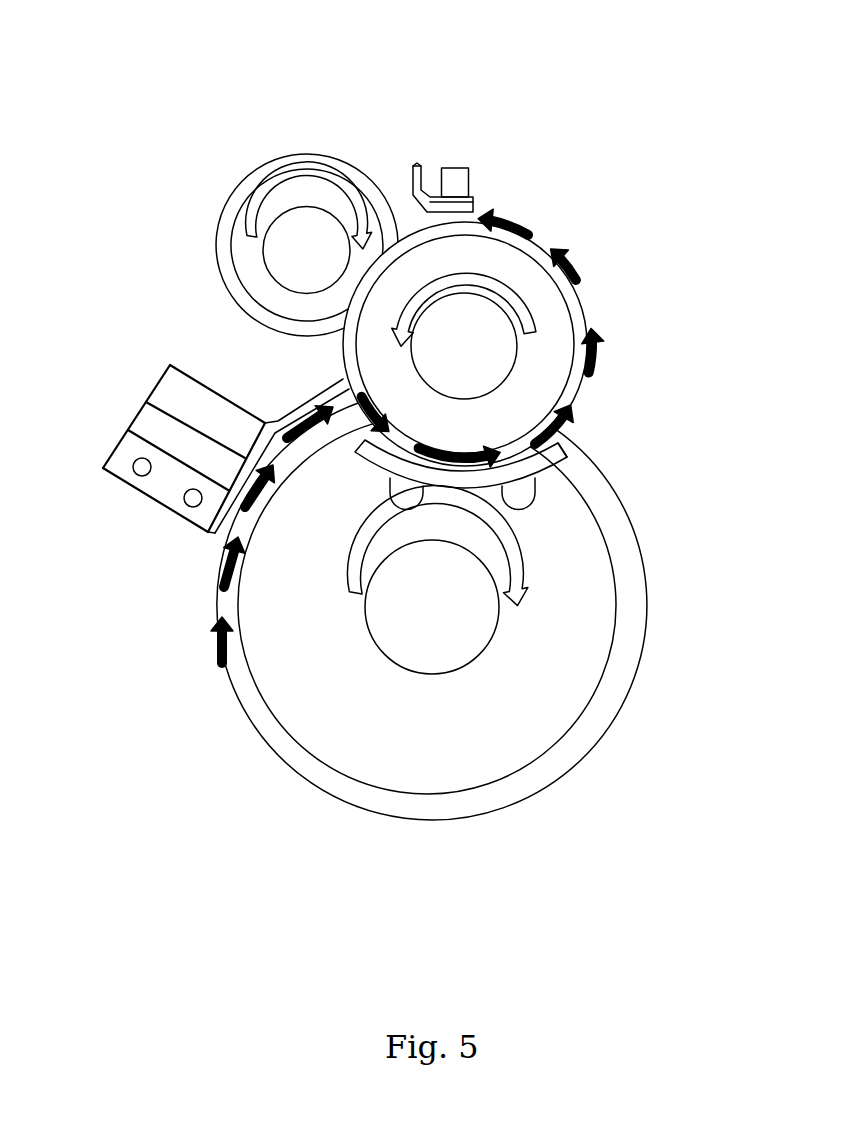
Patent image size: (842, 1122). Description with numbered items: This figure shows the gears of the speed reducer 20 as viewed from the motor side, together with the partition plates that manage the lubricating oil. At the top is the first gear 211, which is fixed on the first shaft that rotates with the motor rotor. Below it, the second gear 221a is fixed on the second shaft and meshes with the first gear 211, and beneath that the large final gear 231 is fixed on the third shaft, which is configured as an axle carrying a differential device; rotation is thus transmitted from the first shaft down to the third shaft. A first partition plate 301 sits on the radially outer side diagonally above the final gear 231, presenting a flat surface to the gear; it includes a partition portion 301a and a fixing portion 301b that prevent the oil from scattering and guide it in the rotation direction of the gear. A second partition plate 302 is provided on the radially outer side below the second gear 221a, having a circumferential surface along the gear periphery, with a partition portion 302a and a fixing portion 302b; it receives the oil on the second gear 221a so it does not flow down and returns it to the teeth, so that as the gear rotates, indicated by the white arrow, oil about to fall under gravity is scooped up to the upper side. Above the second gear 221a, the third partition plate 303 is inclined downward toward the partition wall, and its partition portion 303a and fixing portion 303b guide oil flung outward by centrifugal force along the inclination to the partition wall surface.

The speed reducer 20 is at (174, 133).
The first gear 211 is at (328, 168).
The second gear 221a is at (568, 320).
The final gear 231 is at (513, 790).
The first partition plate 301 is at (147, 396).
The partition portion 301a is at (297, 407).
The fixing portion 301b is at (178, 438).
The second partition plate 302 is at (575, 469).
The partition portion 302a is at (565, 452).
The fixing portion 302b is at (522, 495).
The third partition plate 303 is at (567, 116).
The partition portion 303a is at (431, 166).
The fixing portion 303b is at (504, 202).